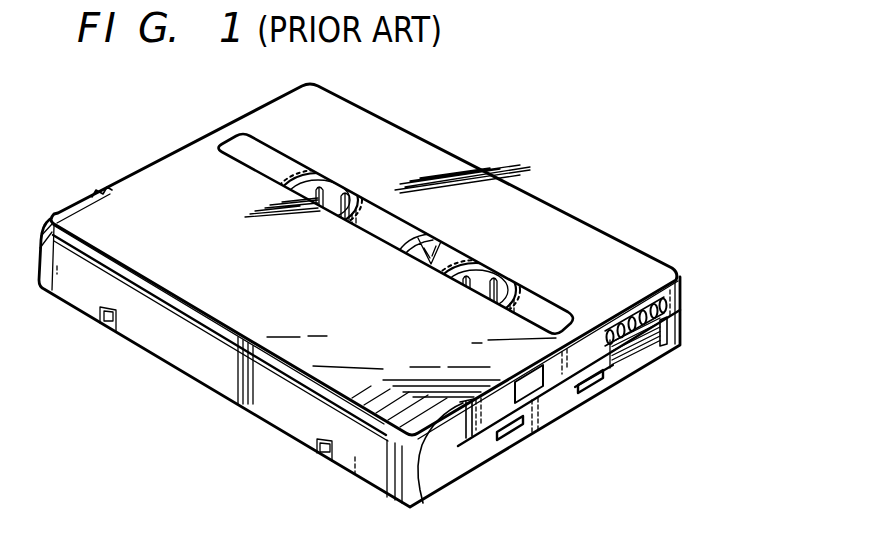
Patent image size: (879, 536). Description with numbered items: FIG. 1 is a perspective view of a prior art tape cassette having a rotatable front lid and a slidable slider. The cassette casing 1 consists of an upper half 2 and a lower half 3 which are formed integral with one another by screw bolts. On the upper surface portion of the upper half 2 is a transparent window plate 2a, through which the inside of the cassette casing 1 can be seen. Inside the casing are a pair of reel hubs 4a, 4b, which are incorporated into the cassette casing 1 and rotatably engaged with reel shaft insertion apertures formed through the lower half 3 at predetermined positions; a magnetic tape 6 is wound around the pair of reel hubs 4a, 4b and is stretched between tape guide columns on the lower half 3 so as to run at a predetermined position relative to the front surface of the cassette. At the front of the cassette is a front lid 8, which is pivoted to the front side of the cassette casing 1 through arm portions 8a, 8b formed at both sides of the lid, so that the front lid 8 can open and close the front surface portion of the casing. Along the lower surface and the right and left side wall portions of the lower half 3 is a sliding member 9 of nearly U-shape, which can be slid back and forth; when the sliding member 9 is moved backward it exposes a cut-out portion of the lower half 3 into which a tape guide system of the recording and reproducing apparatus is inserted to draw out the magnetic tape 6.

The cassette casing 1 is at (722, 266).
The upper half 2 is at (683, 296).
The transparent window plate 2a is at (562, 306).
The lower half 3 is at (683, 326).
The reel hub 4a is at (310, 168).
The reel hub 4b is at (452, 260).
The magnetic tape 6 is at (400, 227).
The front lid 8 is at (193, 367).
The arm portion 8a is at (88, 205).
The arm portion 8b is at (458, 456).
The sliding member 9 is at (568, 412).